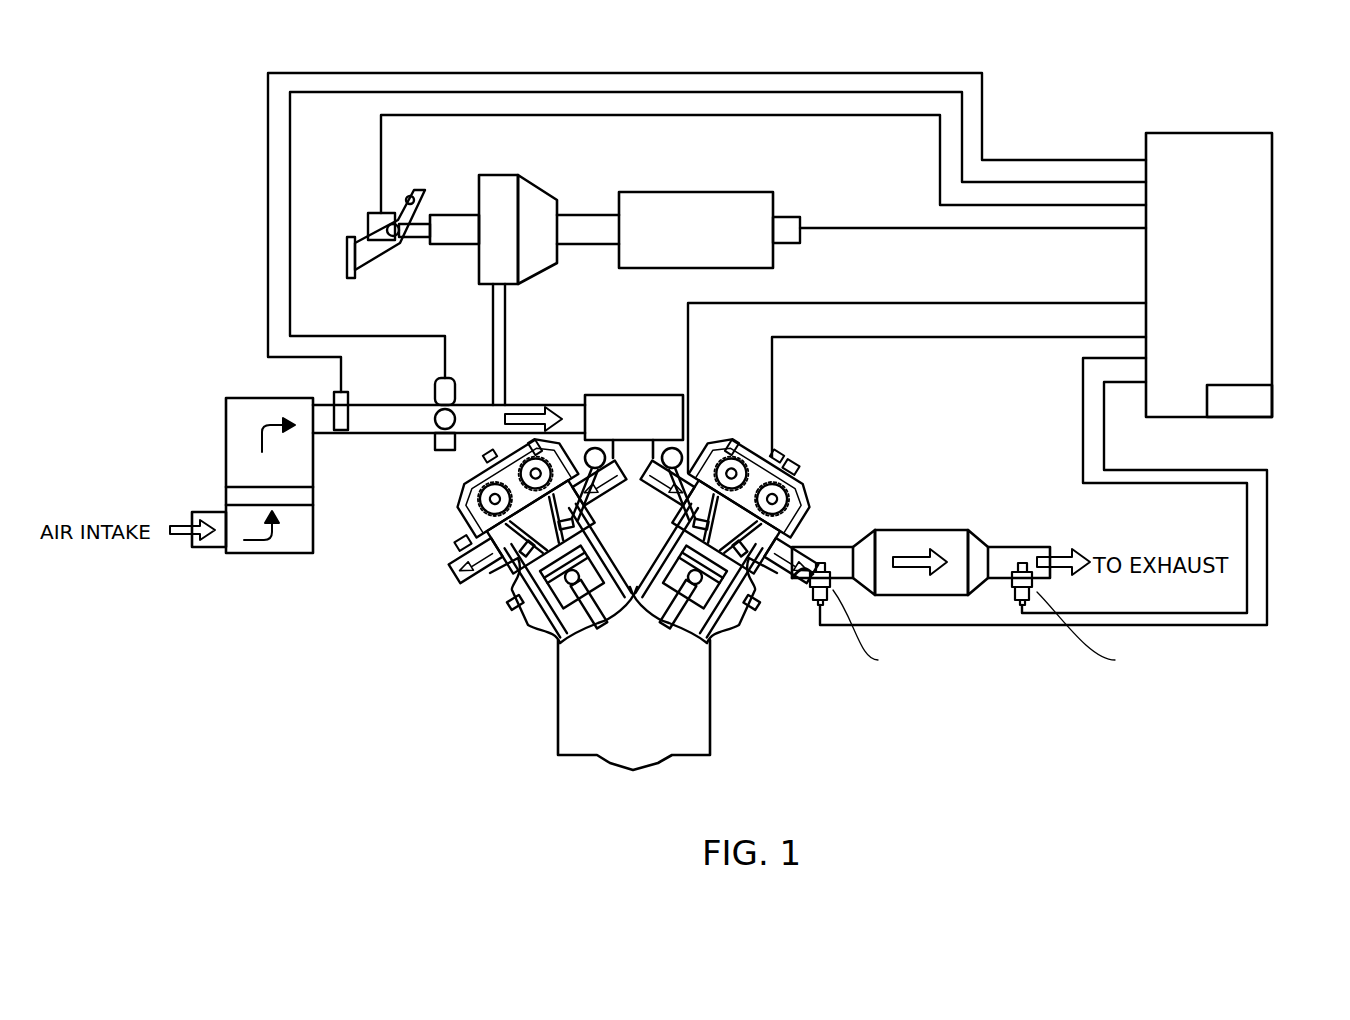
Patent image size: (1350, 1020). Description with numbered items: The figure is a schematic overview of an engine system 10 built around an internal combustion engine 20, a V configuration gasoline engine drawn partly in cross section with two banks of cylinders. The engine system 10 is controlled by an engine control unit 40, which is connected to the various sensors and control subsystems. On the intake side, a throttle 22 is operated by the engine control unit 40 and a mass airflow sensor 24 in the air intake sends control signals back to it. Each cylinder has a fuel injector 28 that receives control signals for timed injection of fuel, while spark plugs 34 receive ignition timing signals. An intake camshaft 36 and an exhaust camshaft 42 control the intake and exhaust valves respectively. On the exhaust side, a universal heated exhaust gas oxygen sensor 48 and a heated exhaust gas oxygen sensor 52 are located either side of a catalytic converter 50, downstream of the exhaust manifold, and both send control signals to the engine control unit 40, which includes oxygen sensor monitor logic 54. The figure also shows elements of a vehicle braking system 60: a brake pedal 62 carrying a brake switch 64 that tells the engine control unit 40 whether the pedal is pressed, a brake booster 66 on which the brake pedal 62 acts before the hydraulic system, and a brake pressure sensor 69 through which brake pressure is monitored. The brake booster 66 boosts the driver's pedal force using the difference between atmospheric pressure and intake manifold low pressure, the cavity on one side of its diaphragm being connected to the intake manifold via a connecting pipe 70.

The engine system 10 is at (289, 732).
The internal combustion engine 20 is at (510, 685).
The throttle 22 is at (430, 405).
The mass airflow sensor 24 is at (341, 432).
The fuel injector 28 is at (668, 448).
The spark plug 34 is at (488, 458).
The intake camshaft 36 is at (530, 450).
The engine control unit 40 is at (1203, 133).
The exhaust camshaft 42 is at (466, 545).
The universal heated exhaust gas oxygen sensor 48 is at (805, 592).
The catalytic converter 50 is at (925, 530).
The heated exhaust gas oxygen sensor 52 is at (1010, 592).
The oxygen sensor monitor logic 54 is at (1265, 403).
The vehicle braking system 60 is at (695, 178).
The brake pedal 62 is at (375, 250).
The brake switch 64 is at (372, 213).
The brake booster 66 is at (495, 175).
The brake pressure sensor 69 is at (788, 215).
The connecting pipe 70 is at (507, 335).